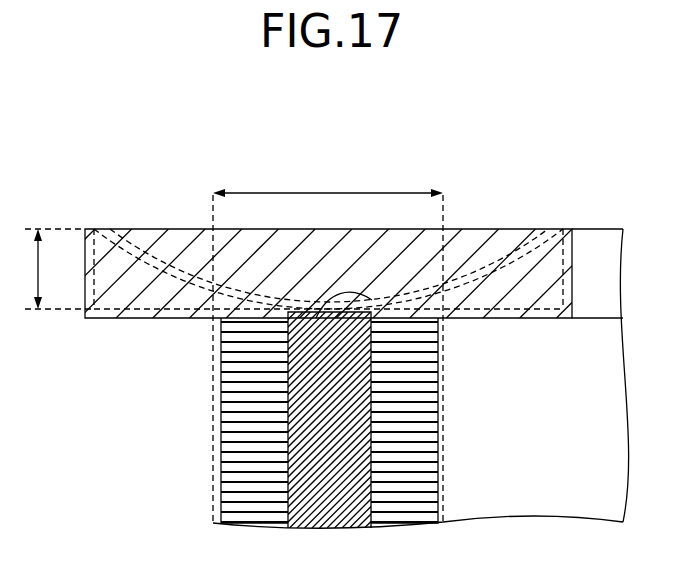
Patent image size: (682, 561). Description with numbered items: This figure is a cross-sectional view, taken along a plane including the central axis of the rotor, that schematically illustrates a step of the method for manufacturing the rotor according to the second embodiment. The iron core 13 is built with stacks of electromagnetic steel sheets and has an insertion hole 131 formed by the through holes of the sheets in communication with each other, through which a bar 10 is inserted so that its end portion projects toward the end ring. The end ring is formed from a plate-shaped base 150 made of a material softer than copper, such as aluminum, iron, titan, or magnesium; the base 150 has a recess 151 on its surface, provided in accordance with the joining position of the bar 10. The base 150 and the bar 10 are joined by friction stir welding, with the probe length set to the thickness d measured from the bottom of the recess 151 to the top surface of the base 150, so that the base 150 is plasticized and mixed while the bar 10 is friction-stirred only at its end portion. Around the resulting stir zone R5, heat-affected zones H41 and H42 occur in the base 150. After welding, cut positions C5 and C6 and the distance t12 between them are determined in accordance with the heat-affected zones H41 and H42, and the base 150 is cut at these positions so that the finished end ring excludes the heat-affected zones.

The bar 10 is at (305, 392).
The iron core 13 is at (221, 450).
The insertion hole 131 is at (300, 497).
The base 150 is at (548, 230).
The recess 151 is at (372, 300).
The heat-affected zone H41 is at (102, 229).
The heat-affected zone H42 is at (560, 229).
The cut position C5 is at (213, 213).
The cut position C6 is at (445, 213).
The stir zone R5 is at (485, 250).
The distance t12 is at (328, 181).
The thickness d is at (54, 269).